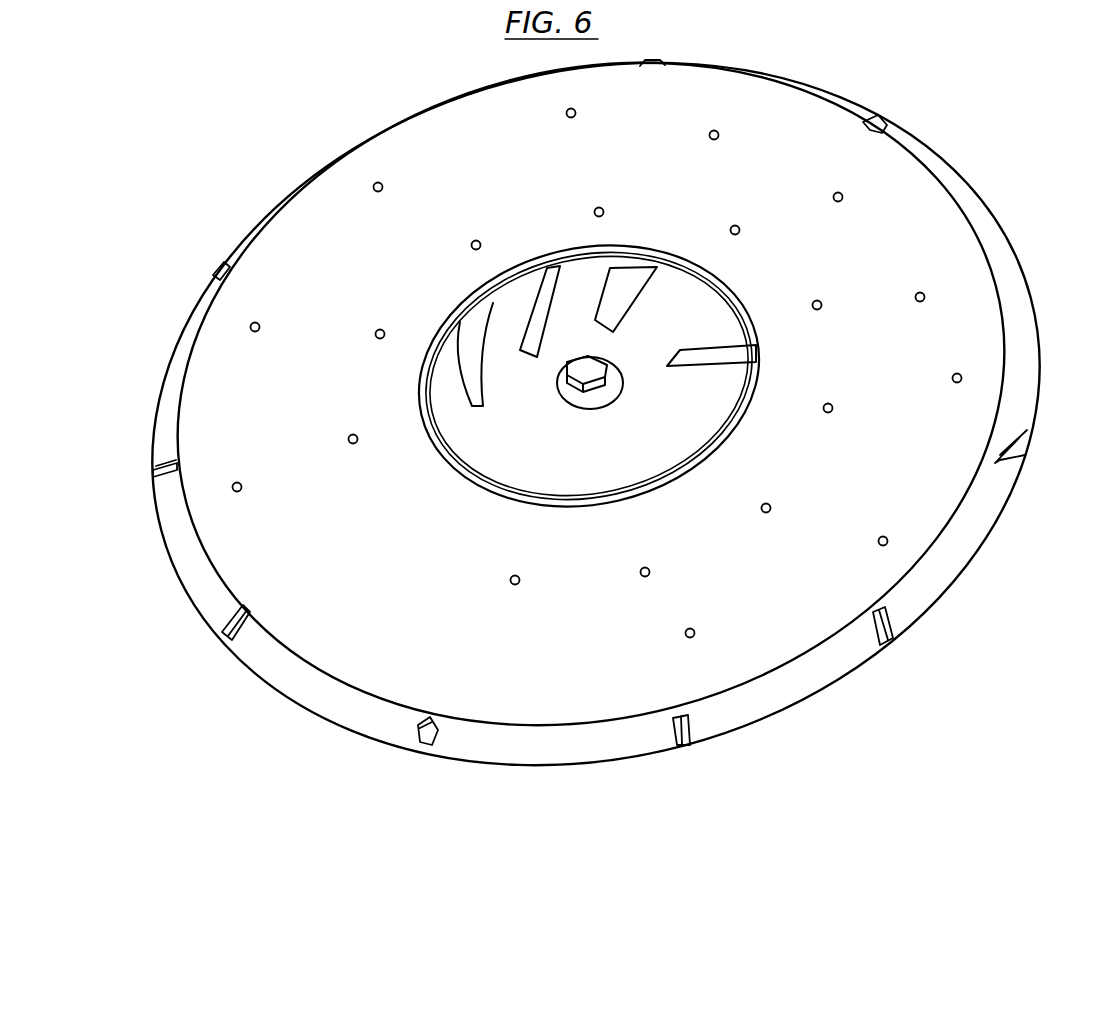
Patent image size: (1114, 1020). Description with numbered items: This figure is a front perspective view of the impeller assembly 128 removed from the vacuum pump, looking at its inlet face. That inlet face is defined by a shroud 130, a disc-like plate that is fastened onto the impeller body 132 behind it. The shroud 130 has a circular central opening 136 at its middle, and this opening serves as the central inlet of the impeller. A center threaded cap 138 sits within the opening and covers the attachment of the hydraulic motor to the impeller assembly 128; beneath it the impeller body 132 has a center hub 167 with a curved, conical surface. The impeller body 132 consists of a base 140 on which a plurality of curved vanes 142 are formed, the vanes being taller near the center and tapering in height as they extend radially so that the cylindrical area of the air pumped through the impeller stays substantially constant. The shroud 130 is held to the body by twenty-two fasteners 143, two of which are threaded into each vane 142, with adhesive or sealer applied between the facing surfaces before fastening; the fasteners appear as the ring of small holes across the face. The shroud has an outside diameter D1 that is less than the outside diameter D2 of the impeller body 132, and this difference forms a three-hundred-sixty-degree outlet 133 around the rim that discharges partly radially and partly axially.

The impeller assembly 128 is at (897, 105).
The shroud 130 is at (888, 167).
The impeller body 132 is at (715, 388).
The 360 degree outlet 133 is at (945, 548).
The circular central opening 136 is at (508, 465).
The center threaded cap 138 is at (605, 362).
The base 140 is at (530, 447).
The curved vanes 142 is at (527, 340).
The fasteners 143 is at (821, 302).
The center hub 167 is at (608, 395).
The outside diameter of the shroud D1 is at (995, 300).
The outside diameter of the impeller body D2 is at (525, 82).